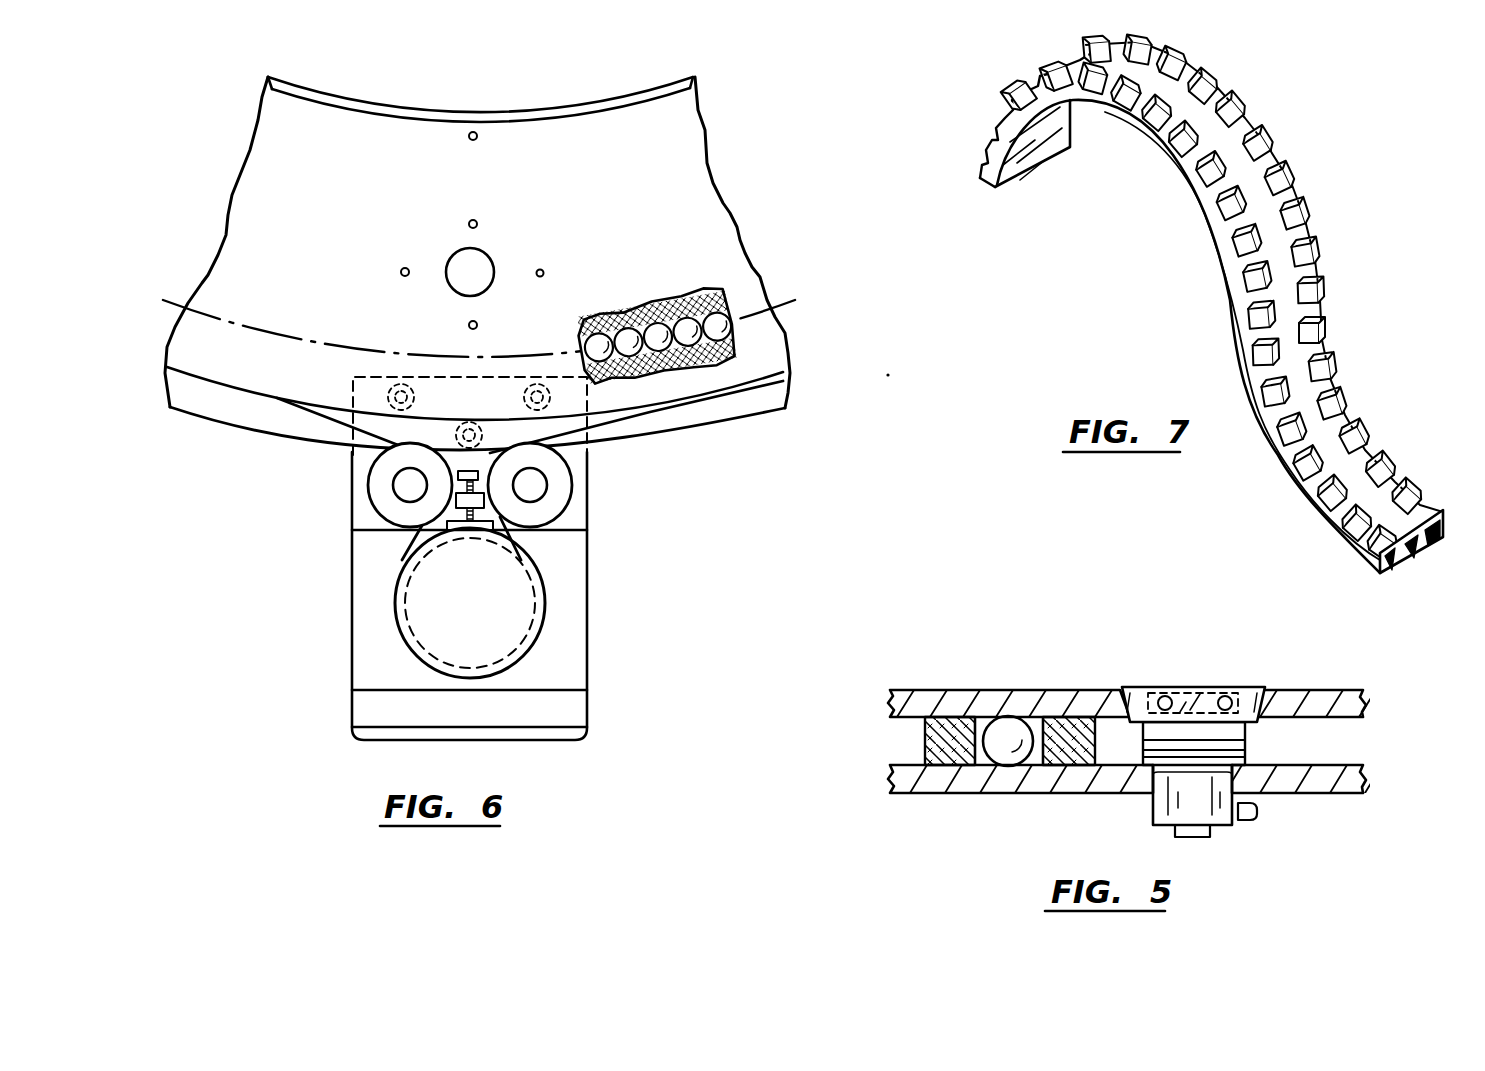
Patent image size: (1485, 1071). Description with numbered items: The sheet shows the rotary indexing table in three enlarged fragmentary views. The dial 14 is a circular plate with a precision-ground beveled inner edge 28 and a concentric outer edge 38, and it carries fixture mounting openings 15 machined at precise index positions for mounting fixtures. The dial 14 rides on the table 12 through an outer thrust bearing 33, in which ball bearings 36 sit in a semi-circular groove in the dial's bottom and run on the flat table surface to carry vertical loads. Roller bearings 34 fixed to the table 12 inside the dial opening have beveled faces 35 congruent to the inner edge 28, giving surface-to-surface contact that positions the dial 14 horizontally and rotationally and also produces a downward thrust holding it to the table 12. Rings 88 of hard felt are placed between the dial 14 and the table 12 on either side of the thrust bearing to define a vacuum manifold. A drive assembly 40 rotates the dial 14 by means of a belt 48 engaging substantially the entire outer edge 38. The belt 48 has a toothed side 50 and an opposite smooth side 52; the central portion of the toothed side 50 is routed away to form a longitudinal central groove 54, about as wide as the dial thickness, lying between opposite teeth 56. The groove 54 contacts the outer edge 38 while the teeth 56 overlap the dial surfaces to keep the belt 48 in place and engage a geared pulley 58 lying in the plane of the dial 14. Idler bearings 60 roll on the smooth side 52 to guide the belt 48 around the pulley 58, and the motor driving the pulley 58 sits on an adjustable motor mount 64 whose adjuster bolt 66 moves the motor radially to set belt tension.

In FIG. 6, the table 12 is at (257, 426).
In FIG. 5, the table 12 is at (1290, 793).
In FIG. 6, the dial 14 is at (262, 150).
In FIG. 5, the dial 14 is at (975, 690).
In FIG. 6, the fixture mounting openings 15 is at (541, 272).
In FIG. 5, the inner edge 28 is at (1125, 710).
In FIG. 6, the outer thrust bearing 33 is at (743, 339).
In FIG. 5, the roller bearings 34 is at (1200, 685).
In FIG. 5, the beveled faces 35 is at (1112, 706).
In FIG. 6, the ball bearings 36 is at (615, 312).
In FIG. 5, the ball bearings 36 is at (1003, 748).
In FIG. 6, the outer edge 38 is at (535, 425).
In FIG. 6, the drive assembly 40 is at (626, 606).
In FIG. 6, the belt 48 is at (605, 425).
In FIG. 7, the belt 48 is at (1326, 216).
In FIG. 7, the toothed side 50 is at (1365, 462).
In FIG. 7, the smooth side 52 is at (1043, 147).
In FIG. 7, the longitudinal central groove 54 is at (1200, 124).
In FIG. 7, the teeth 56 is at (1250, 248).
In FIG. 6, the geared pulley 58 is at (480, 616).
In FIG. 6, the idler bearings 60 is at (376, 494).
In FIG. 6, the adjustable motor mount 64 is at (355, 603).
In FIG. 6, the adjuster bolt 66 is at (462, 470).
In FIG. 5, the rings 88 is at (930, 750).